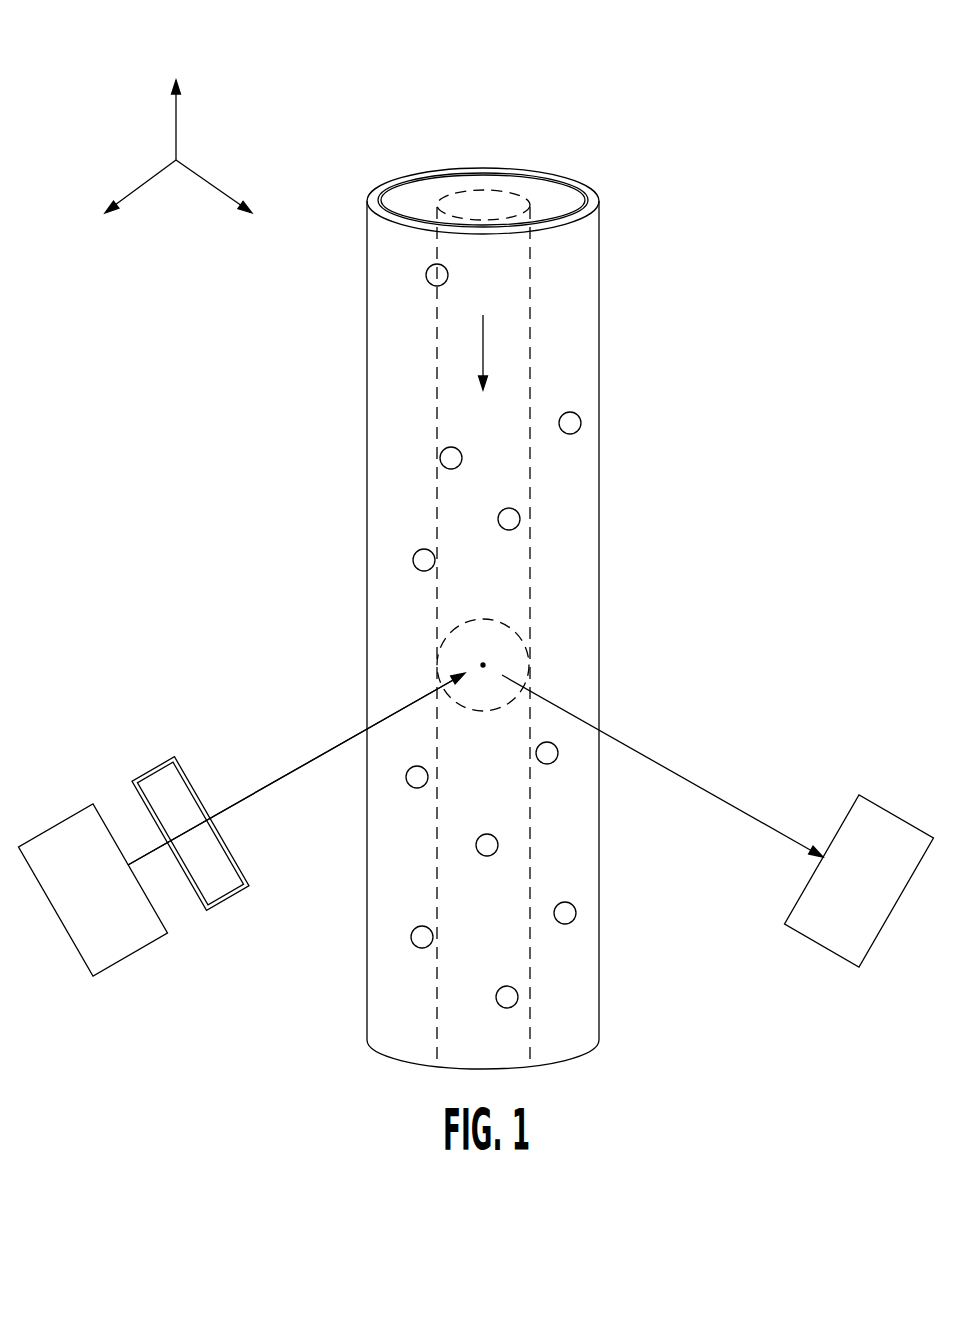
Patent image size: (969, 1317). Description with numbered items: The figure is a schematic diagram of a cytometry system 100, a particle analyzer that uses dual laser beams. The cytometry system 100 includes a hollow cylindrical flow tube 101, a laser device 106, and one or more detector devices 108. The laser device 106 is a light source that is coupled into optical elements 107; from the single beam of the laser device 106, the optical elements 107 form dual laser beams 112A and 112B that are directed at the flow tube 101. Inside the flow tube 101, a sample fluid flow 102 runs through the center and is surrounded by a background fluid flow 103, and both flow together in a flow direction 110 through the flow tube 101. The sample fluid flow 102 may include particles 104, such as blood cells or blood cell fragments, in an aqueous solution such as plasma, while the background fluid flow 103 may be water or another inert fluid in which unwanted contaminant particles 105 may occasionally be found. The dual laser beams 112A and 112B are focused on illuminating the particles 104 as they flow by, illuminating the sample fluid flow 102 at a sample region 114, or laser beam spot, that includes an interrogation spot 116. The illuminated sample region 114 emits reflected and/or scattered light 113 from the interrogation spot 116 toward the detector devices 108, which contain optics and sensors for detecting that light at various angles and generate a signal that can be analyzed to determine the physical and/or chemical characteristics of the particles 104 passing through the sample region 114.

The cytometry system 100 is at (652, 96).
The flow tube 101 is at (599, 232).
The sample fluid flow 102 is at (530, 288).
The background fluid flow 103 is at (578, 355).
The particles 104 is at (514, 518).
The contaminant particles 105 is at (575, 423).
The laser device 106 is at (106, 900).
The optical elements 107 is at (148, 767).
The detector devices 108 is at (874, 891).
The flow direction 110 is at (483, 345).
The laser beam 112A is at (280, 782).
The laser beam 112B is at (280, 782).
The reflected or scattered light 113 is at (683, 778).
The sample region 114 is at (440, 630).
The interrogation spot 116 is at (483, 665).